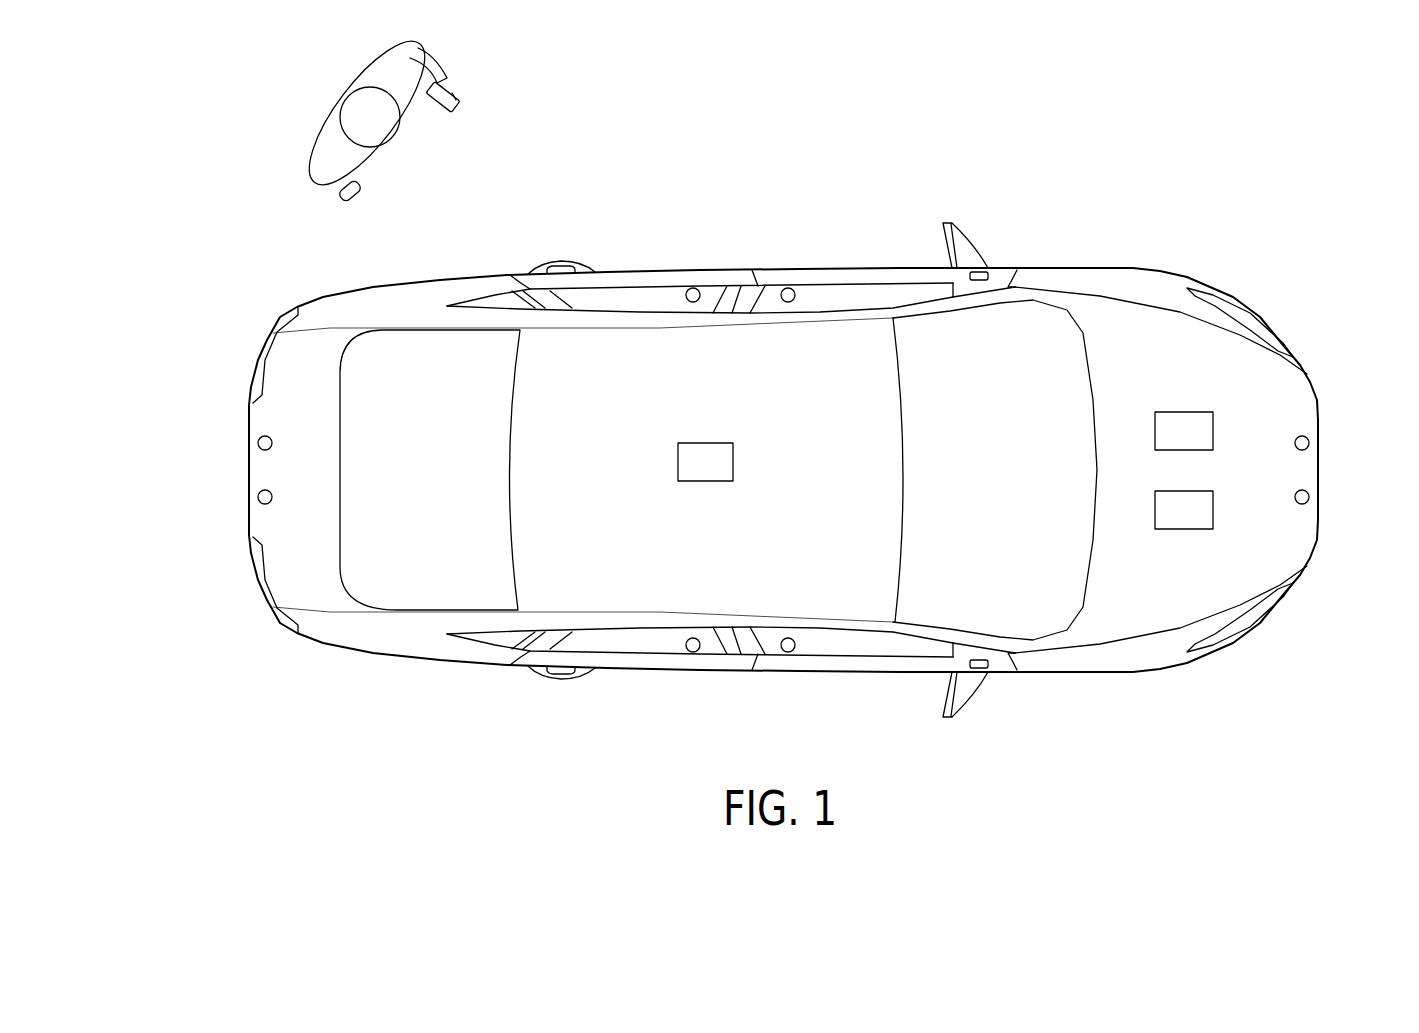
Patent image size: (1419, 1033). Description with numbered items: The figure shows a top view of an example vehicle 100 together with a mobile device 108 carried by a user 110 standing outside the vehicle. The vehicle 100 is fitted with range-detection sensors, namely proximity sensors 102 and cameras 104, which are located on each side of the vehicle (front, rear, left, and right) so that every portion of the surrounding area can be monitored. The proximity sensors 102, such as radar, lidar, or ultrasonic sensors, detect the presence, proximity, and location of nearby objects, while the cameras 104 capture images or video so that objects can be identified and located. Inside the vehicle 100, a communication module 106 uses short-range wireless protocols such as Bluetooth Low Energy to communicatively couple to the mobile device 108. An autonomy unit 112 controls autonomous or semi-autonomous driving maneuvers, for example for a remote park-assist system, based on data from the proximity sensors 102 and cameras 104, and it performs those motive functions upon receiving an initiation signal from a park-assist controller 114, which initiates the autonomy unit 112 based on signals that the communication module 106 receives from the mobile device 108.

The vehicle 100 is at (1133, 268).
The proximity sensors 102 is at (693, 288).
The cameras 104 is at (788, 288).
The communication module 106 is at (689, 472).
The mobile device 108 is at (463, 98).
The user 110 is at (323, 155).
The autonomy unit 112 is at (1167, 442).
The park-assist controller 114 is at (1167, 521).